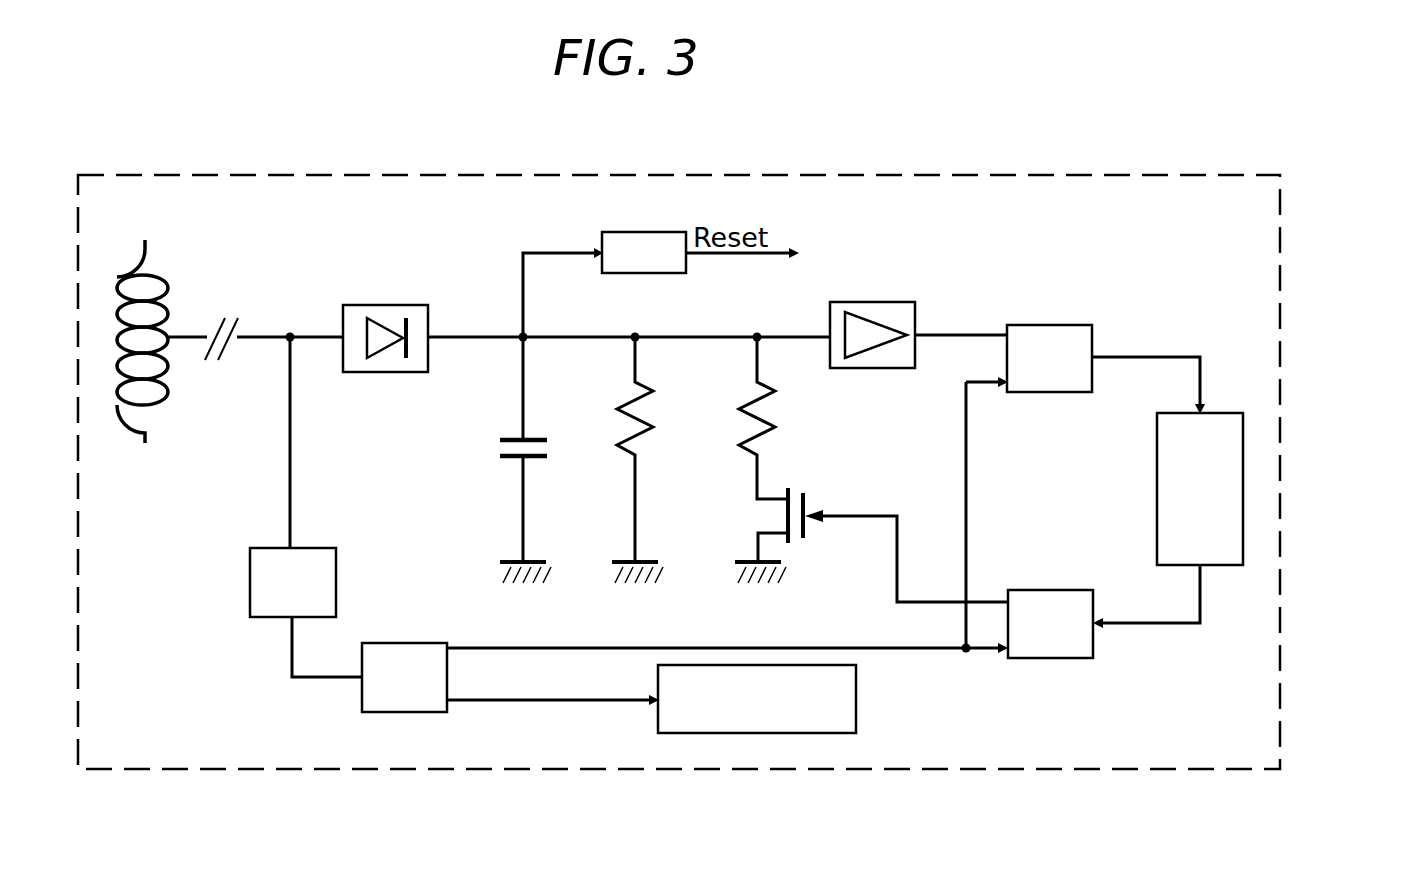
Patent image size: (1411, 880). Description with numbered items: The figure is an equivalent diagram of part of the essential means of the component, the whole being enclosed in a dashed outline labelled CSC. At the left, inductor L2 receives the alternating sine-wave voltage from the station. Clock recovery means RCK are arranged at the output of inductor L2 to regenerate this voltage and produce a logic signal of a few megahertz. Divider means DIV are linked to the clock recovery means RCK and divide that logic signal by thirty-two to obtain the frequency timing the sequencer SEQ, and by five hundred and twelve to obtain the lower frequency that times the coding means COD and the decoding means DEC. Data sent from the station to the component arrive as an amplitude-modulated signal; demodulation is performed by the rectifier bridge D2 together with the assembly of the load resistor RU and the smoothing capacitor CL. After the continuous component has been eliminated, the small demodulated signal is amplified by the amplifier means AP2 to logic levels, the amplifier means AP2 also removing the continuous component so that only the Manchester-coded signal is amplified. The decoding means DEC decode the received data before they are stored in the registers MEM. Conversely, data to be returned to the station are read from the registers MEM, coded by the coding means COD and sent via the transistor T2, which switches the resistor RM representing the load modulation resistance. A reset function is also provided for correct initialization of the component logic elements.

The inductor L2 is at (150, 285).
The rectifier bridge D2 is at (381, 303).
The smoothing capacitor CL is at (548, 449).
The load resistor RU is at (653, 410).
The load modulation resistance RM is at (775, 410).
The amplifier means AP2 is at (872, 302).
The transistor T2 is at (805, 505).
The card circuit (dashed enclosure) CSC is at (1273, 538).
The decoding means DEC is at (1049, 358).
The registers MEM is at (1200, 489).
The coding means COD is at (1050, 624).
The clock recovery means RCK is at (293, 582).
The divider means DIV is at (404, 677).
The sequencer SEQ is at (757, 699).